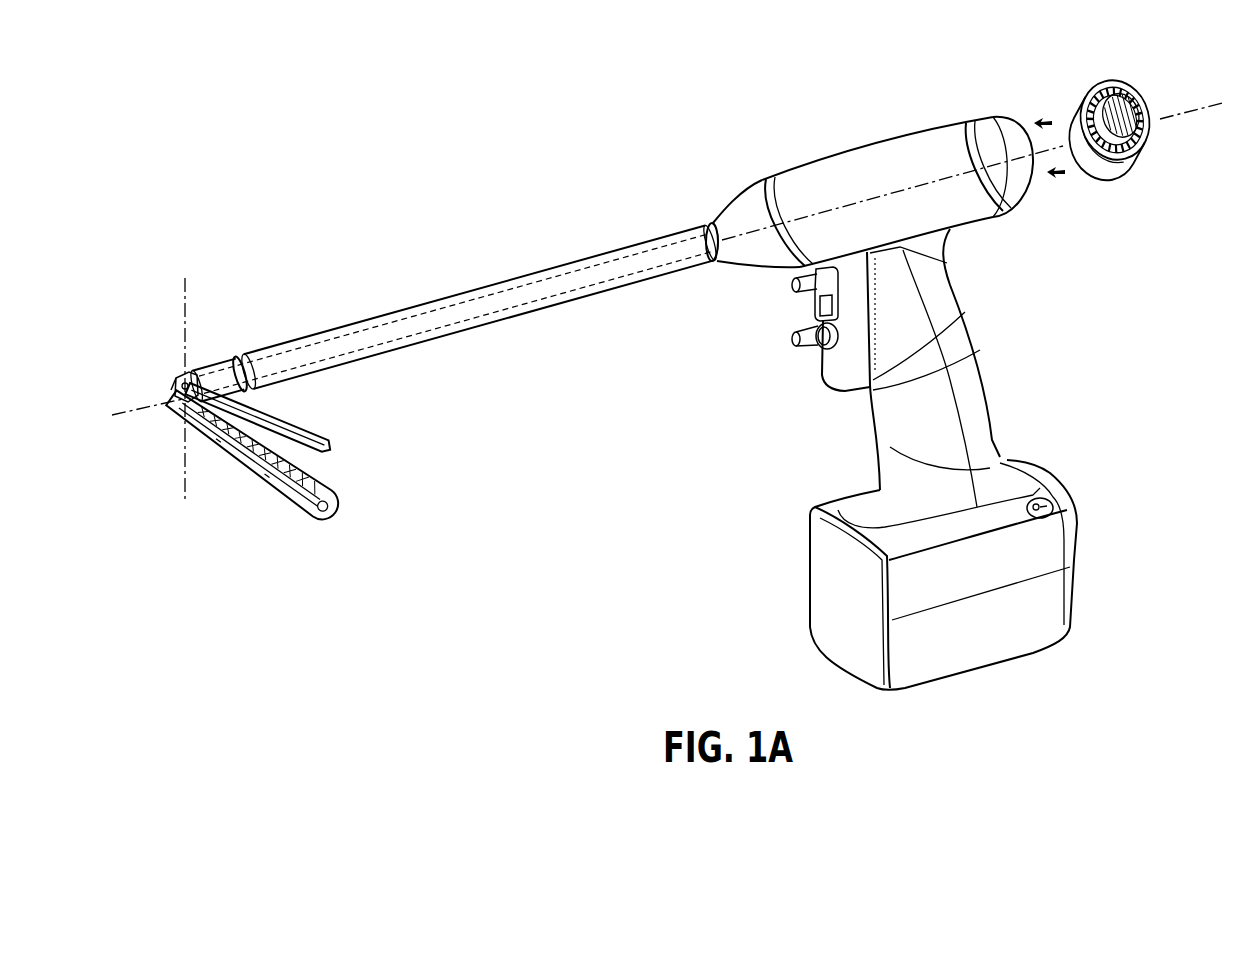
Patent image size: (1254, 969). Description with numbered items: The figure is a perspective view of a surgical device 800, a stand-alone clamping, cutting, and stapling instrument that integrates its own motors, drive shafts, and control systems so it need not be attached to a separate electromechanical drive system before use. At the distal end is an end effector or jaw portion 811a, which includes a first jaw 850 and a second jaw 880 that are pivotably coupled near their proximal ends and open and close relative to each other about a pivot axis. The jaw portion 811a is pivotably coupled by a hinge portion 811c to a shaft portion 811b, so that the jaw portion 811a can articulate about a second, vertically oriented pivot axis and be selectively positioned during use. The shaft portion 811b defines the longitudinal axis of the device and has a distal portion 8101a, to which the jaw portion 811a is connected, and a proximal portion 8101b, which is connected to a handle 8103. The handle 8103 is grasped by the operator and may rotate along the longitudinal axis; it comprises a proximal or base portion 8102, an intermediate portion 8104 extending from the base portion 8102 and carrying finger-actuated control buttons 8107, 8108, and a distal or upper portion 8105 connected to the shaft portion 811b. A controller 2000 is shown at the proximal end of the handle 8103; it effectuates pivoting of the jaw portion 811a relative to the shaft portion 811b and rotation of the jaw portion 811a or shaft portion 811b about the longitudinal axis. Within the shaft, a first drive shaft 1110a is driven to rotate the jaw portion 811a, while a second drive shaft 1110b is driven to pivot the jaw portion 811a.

The surgical device 800 is at (276, 224).
The handle 8103 is at (920, 148).
The distal or upper portion 8105 is at (793, 178).
The intermediate portion 8104 is at (975, 362).
The finger-actuated control button 8107 is at (793, 284).
The finger-actuated control button 8108 is at (793, 340).
The proximal or base portion 8102 is at (1072, 600).
The shaft portion 811b is at (532, 322).
The proximal portion 8101b is at (283, 343).
The distal portion 8101a is at (218, 362).
The hinge portion 811c is at (198, 370).
The first drive shaft 1110a is at (581, 259).
The second drive shaft 1110b is at (606, 283).
The end effector or jaw portion 811a is at (268, 500).
The first jaw 850 is at (306, 441).
The second jaw 880 is at (322, 477).
The controller 2000 is at (1107, 177).